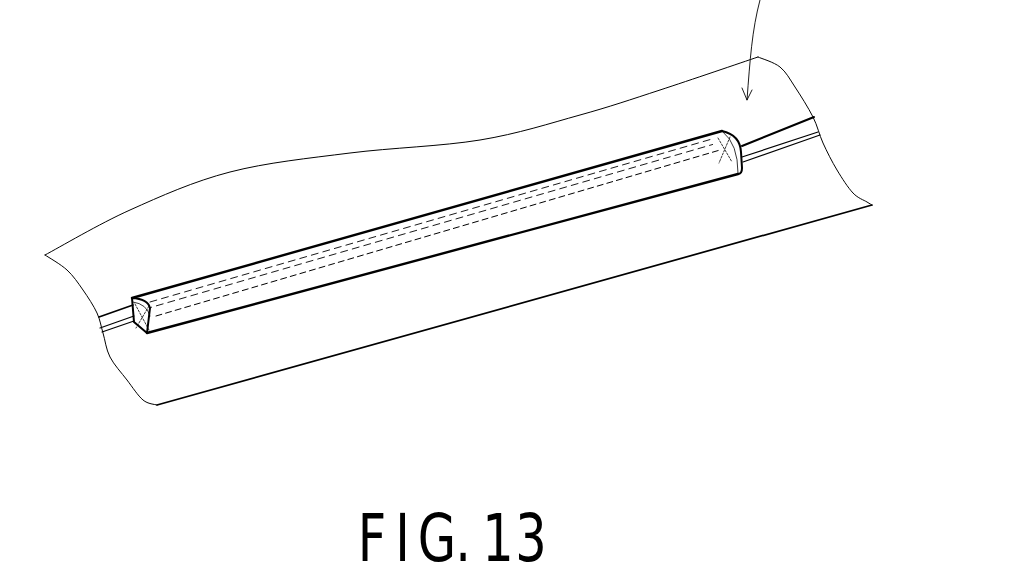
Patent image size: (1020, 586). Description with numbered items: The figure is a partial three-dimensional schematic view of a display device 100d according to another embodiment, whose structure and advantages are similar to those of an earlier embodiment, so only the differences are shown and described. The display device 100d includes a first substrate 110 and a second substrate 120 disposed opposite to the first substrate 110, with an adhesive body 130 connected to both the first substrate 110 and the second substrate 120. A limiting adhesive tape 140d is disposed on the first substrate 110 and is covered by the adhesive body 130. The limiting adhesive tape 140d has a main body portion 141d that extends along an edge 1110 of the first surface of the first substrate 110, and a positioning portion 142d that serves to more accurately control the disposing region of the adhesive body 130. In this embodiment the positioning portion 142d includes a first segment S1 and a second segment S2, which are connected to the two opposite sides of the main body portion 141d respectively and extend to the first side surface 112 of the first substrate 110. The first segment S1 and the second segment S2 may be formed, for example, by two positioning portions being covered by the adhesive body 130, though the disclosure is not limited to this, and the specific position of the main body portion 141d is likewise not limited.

The display device 100d is at (97, 114).
The first substrate 110 is at (851, 64).
The edge of the first surface 1110 is at (775, 131).
The first side surface 112 is at (791, 138).
The second substrate 120 is at (787, 203).
The adhesive body 130 is at (392, 268).
The limiting adhesive tape 140d is at (607, 163).
The main body portion 141d is at (263, 262).
The positioning portion 142d is at (447, 305).
The first segment S1 is at (157, 312).
The second segment S2 is at (722, 148).